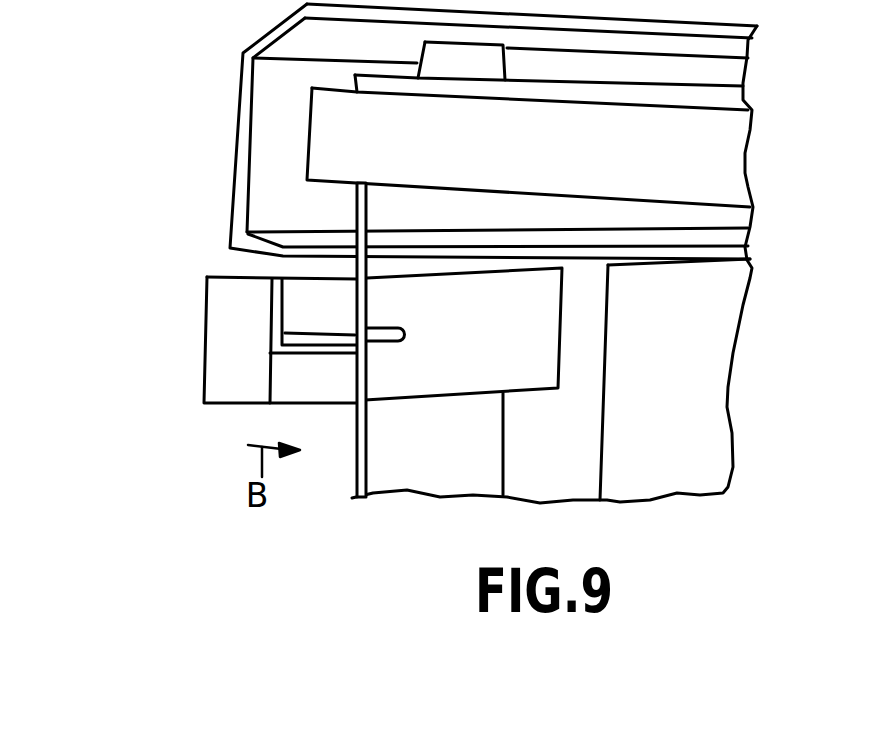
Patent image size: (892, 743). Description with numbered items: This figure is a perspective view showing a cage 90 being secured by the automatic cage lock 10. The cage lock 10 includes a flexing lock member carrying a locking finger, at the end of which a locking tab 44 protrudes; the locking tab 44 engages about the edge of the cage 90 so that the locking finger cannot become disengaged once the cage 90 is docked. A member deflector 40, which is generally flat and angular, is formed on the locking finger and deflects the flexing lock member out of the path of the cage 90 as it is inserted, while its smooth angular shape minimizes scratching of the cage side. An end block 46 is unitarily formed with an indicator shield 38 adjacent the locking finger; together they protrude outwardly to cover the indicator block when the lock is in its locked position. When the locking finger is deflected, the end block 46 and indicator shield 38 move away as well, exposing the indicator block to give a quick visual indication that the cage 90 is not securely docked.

The automatic cage lock 10 is at (128, 232).
The indicator shield 38 is at (227, 296).
The member deflector 40 is at (280, 380).
The locking tab 44 is at (360, 380).
The end block 46 is at (223, 387).
The cage 90 is at (723, 355).